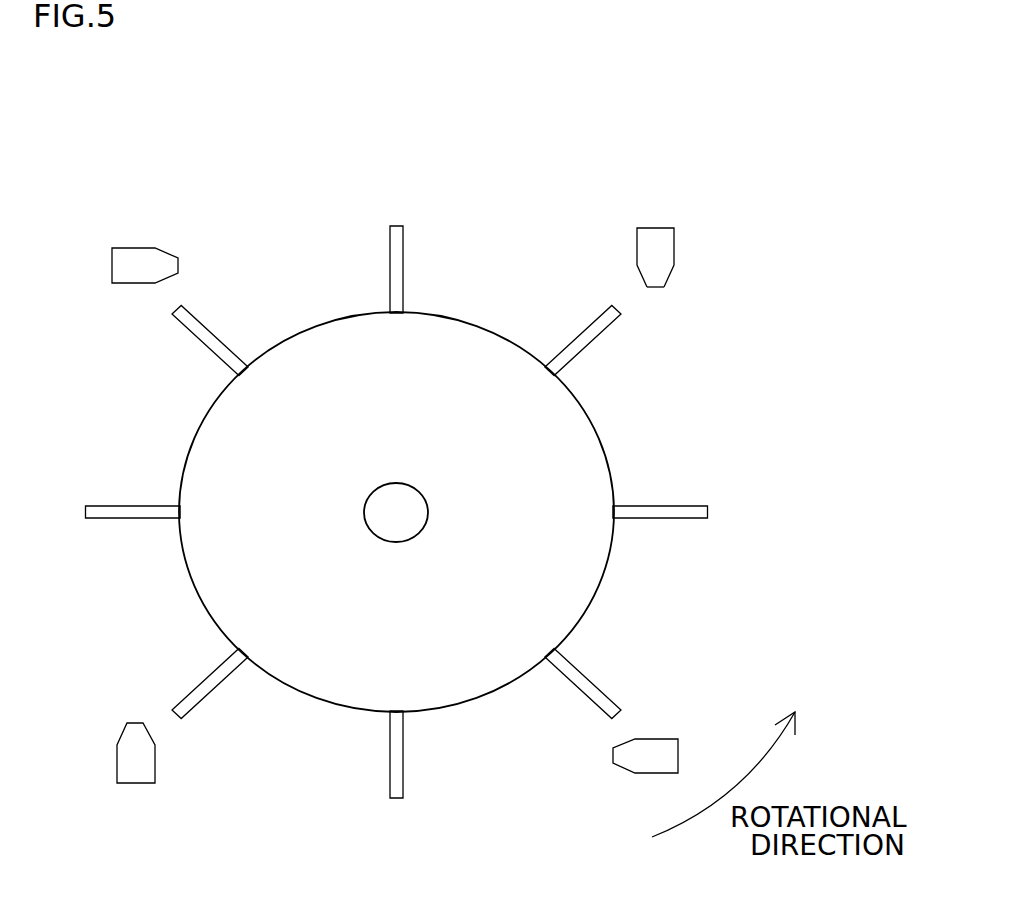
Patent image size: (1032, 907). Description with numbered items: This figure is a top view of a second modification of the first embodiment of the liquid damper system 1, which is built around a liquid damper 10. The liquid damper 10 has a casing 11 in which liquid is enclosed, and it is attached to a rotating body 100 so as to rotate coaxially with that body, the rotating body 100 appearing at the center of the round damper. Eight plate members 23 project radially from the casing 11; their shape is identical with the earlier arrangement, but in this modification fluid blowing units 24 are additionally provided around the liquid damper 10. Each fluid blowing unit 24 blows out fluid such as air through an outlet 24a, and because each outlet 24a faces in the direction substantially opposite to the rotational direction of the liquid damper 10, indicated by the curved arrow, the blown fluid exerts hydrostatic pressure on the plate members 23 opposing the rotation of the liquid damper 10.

The liquid damper system 1 is at (150, 212).
The liquid damper 10 is at (287, 338).
The casing 11 is at (578, 583).
The plate member 23 is at (602, 335).
The fluid blowing unit 24 is at (674, 252).
The outlet 24a is at (656, 287).
The rotating body 100 is at (428, 511).